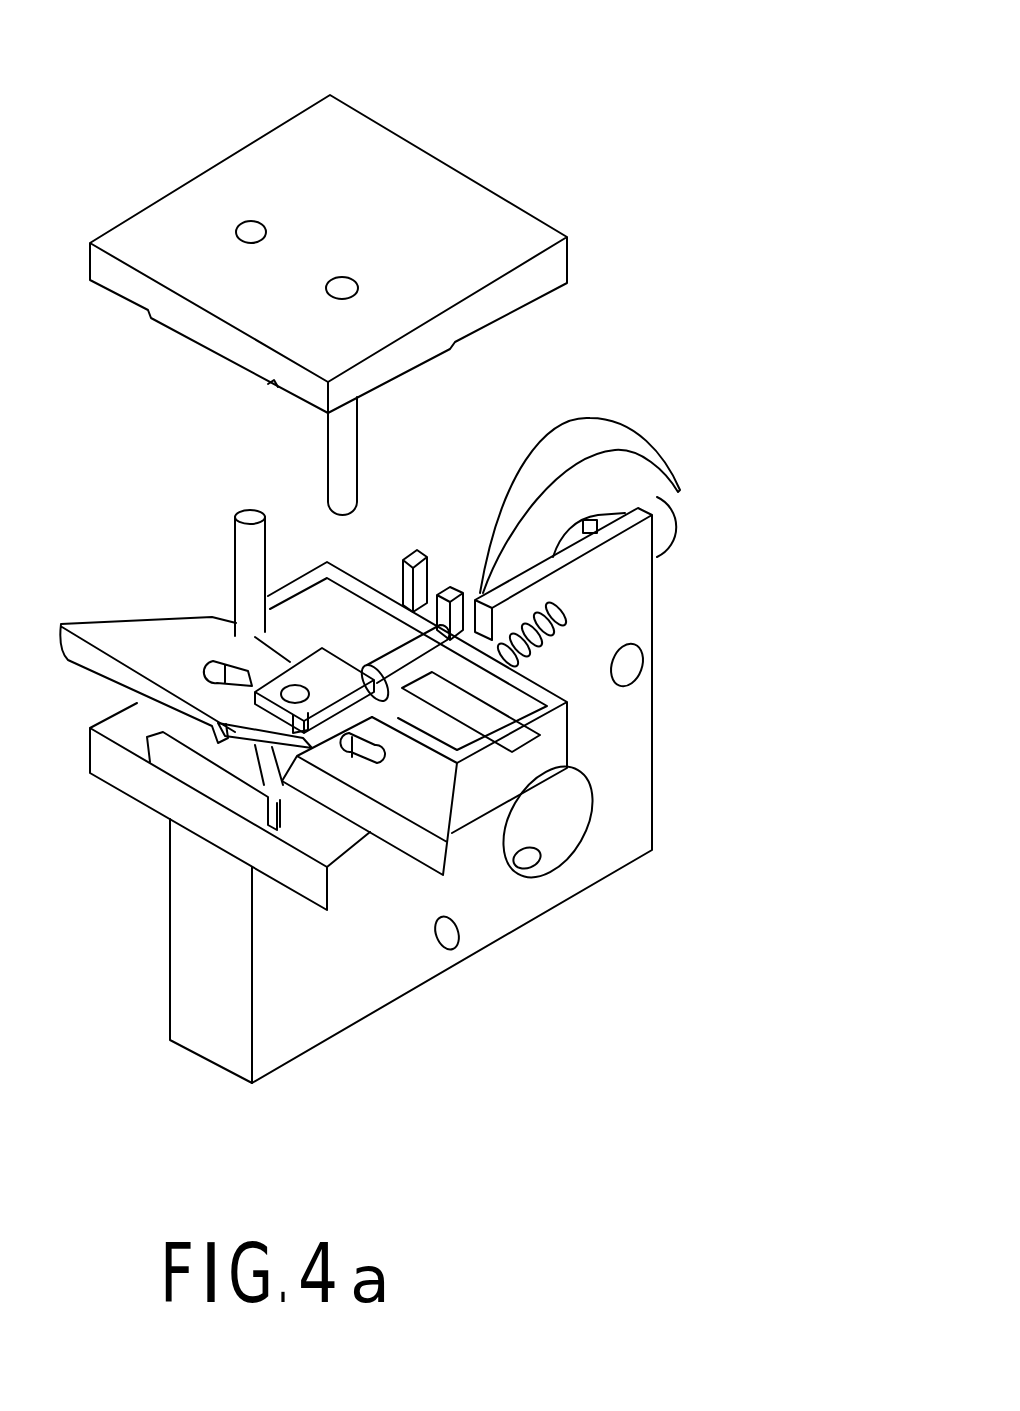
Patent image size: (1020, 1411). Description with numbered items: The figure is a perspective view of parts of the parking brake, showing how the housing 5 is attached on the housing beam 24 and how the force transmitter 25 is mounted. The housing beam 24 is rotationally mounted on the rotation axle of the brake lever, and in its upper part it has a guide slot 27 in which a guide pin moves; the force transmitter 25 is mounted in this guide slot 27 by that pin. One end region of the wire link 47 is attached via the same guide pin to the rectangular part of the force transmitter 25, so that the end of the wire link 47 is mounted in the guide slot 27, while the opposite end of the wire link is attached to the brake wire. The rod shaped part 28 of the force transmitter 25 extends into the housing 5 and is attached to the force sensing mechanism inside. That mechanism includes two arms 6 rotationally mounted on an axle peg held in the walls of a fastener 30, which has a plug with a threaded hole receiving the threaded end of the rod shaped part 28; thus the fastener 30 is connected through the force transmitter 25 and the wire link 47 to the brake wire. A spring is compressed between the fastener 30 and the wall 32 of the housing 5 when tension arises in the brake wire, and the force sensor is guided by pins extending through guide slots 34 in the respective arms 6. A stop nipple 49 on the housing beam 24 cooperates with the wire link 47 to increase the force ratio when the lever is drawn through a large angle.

The housing 5 is at (408, 185).
The arms 6 is at (142, 632).
The housing beam 24 is at (493, 938).
The force transmitter 25 is at (455, 630).
The guide slot 27 is at (543, 635).
The rod shaped part 28 is at (397, 657).
The fastener 30 is at (297, 672).
The wall 32 is at (510, 690).
The guide slots 34 is at (222, 662).
The wire link 47 is at (657, 472).
The stop nipple 49 is at (640, 670).